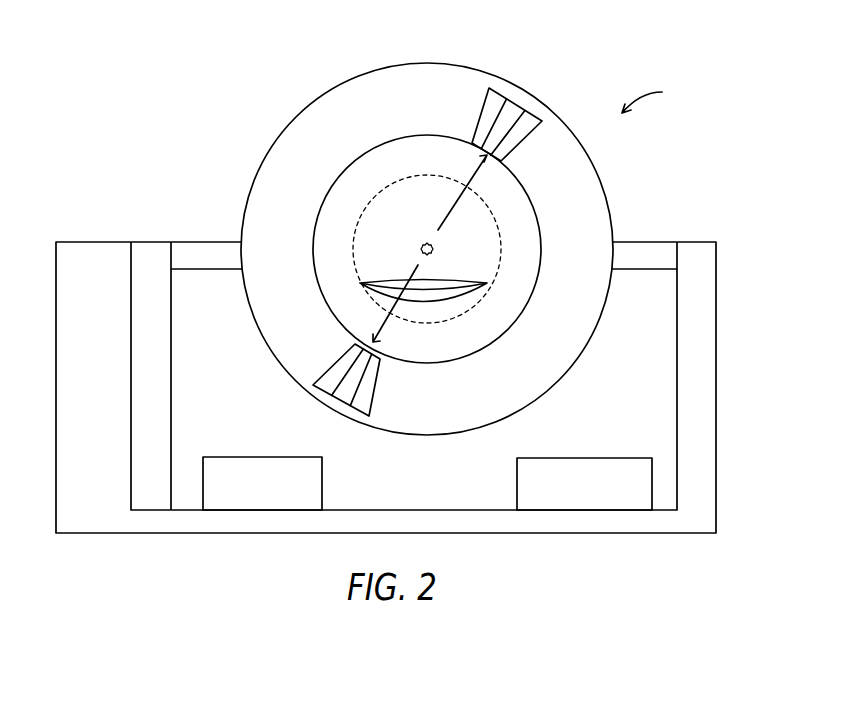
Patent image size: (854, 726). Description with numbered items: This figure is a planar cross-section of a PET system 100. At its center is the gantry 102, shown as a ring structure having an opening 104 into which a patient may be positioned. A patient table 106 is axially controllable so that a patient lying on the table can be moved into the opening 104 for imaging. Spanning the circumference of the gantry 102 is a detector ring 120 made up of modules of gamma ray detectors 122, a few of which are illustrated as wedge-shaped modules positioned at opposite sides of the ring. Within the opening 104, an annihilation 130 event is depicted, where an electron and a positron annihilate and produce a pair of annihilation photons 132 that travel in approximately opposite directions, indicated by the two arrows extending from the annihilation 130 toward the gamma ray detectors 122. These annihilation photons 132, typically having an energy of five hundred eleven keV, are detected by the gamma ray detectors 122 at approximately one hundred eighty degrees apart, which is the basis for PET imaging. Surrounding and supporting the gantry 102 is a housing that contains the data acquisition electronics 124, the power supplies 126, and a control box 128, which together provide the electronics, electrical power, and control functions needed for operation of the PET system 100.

The PET system 100 is at (660, 96).
The gantry 102 is at (300, 108).
The opening 104 is at (393, 216).
The patient table 106 is at (383, 283).
The detector ring 120 is at (520, 98).
The gamma ray detectors 122 is at (507, 118).
The data acquisition electronics 124 is at (653, 488).
The power supplies 126 is at (203, 487).
The control box 128 is at (91, 250).
The annihilation 130 is at (435, 247).
The annihilation photons 132 is at (470, 183).